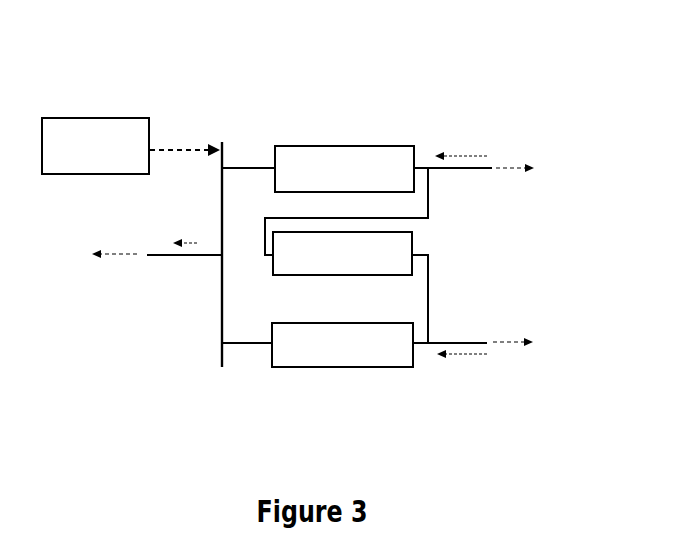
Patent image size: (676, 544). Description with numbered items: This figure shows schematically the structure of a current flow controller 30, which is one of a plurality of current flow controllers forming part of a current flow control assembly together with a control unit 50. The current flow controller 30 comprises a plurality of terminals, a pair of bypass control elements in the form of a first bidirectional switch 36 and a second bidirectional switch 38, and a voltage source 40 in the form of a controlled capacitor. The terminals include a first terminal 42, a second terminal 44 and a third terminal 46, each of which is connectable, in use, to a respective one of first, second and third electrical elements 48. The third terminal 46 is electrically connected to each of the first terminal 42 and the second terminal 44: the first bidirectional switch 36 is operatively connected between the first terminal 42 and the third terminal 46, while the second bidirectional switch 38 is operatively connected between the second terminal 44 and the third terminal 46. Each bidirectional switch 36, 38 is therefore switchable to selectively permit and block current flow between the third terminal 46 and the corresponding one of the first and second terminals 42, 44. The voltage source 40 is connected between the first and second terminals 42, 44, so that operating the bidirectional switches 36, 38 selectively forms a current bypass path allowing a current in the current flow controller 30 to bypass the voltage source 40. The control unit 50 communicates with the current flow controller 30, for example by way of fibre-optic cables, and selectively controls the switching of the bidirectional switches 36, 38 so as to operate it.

The first current flow controller 30 is at (197, 189).
The first bidirectional switch 36 is at (317, 345).
The second bidirectional switch 38 is at (318, 169).
The voltage source 40 is at (346, 255).
The first terminal 42 is at (425, 350).
The second terminal 44 is at (430, 164).
The third terminal 46 is at (217, 263).
The electrical elements 48 is at (314, 254).
The control unit 50 is at (131, 147).